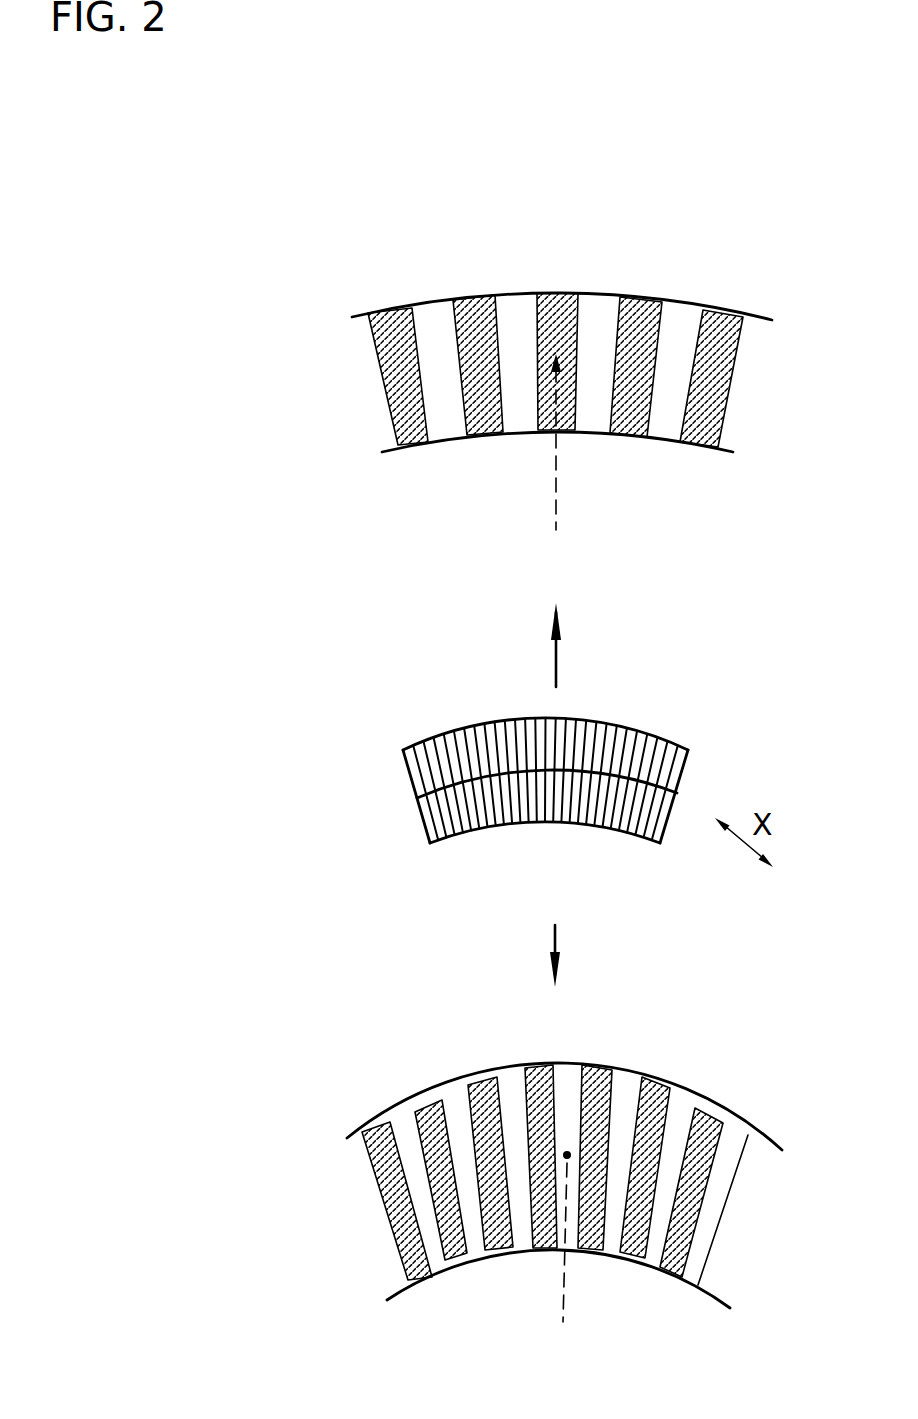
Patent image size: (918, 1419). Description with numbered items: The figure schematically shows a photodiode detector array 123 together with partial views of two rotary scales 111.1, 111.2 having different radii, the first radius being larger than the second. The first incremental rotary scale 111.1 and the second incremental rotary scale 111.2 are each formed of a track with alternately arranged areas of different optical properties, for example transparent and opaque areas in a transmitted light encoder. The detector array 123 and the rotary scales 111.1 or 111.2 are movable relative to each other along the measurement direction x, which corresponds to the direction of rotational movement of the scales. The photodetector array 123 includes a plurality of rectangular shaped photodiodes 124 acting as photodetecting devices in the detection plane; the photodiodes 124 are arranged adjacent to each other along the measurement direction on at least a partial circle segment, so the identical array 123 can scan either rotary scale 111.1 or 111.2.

The first incremental rotary scale 111.1 is at (355, 379).
The second incremental rotary scale 111.2 is at (362, 1240).
The photodiode detector array 123 is at (503, 759).
The photodiodes 124 is at (663, 757).